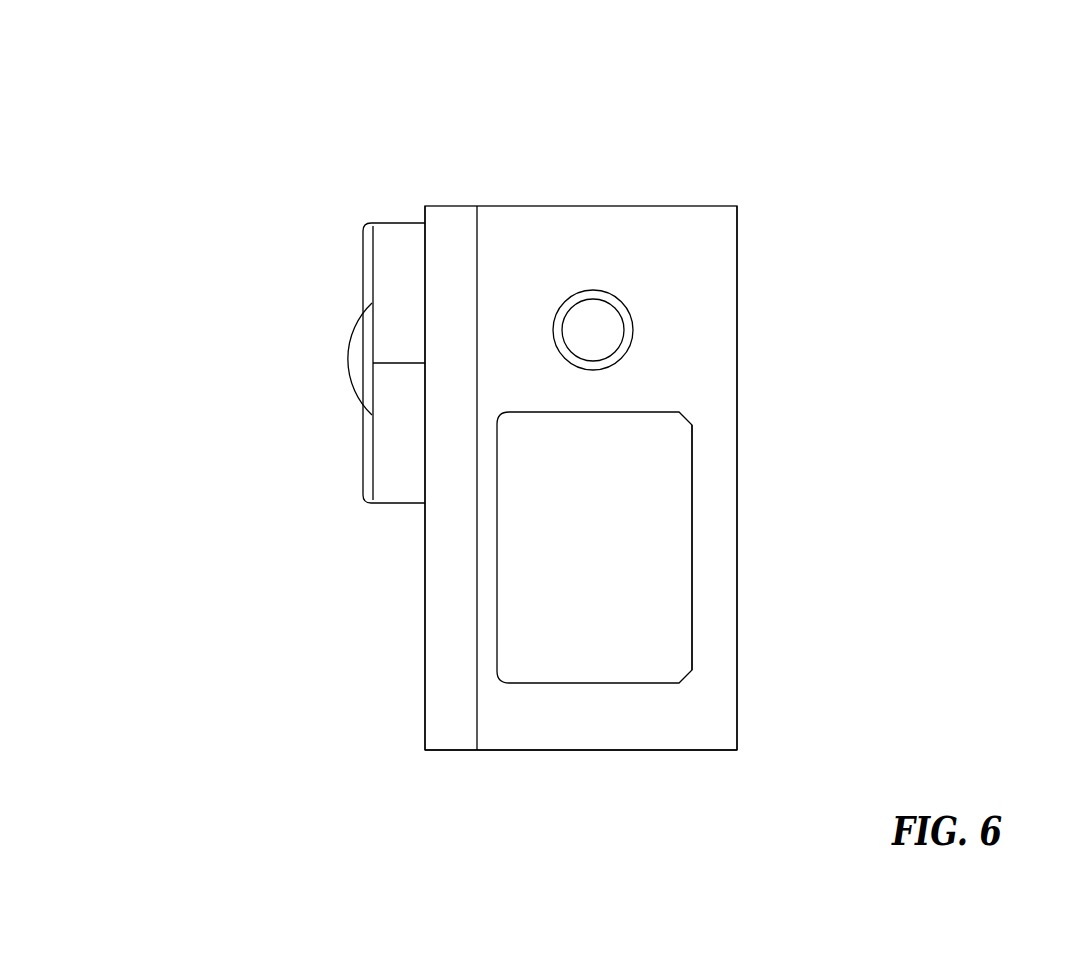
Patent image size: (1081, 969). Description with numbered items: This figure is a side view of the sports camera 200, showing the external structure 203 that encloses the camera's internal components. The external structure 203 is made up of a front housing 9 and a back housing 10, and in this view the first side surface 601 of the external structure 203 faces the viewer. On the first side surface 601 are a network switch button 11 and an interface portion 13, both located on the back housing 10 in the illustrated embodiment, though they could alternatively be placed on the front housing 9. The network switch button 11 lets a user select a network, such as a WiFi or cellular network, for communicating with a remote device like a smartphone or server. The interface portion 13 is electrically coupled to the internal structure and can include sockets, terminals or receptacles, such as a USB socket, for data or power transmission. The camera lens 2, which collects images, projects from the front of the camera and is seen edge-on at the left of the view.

The camera lens 2 is at (390, 430).
The front housing 9 is at (425, 705).
The back housing 10 is at (718, 735).
The network switch button 11 is at (593, 330).
The interface portion 13 is at (588, 508).
The sports camera 200 is at (792, 227).
The external structure 203 is at (737, 395).
The first side surface 601 is at (722, 565).